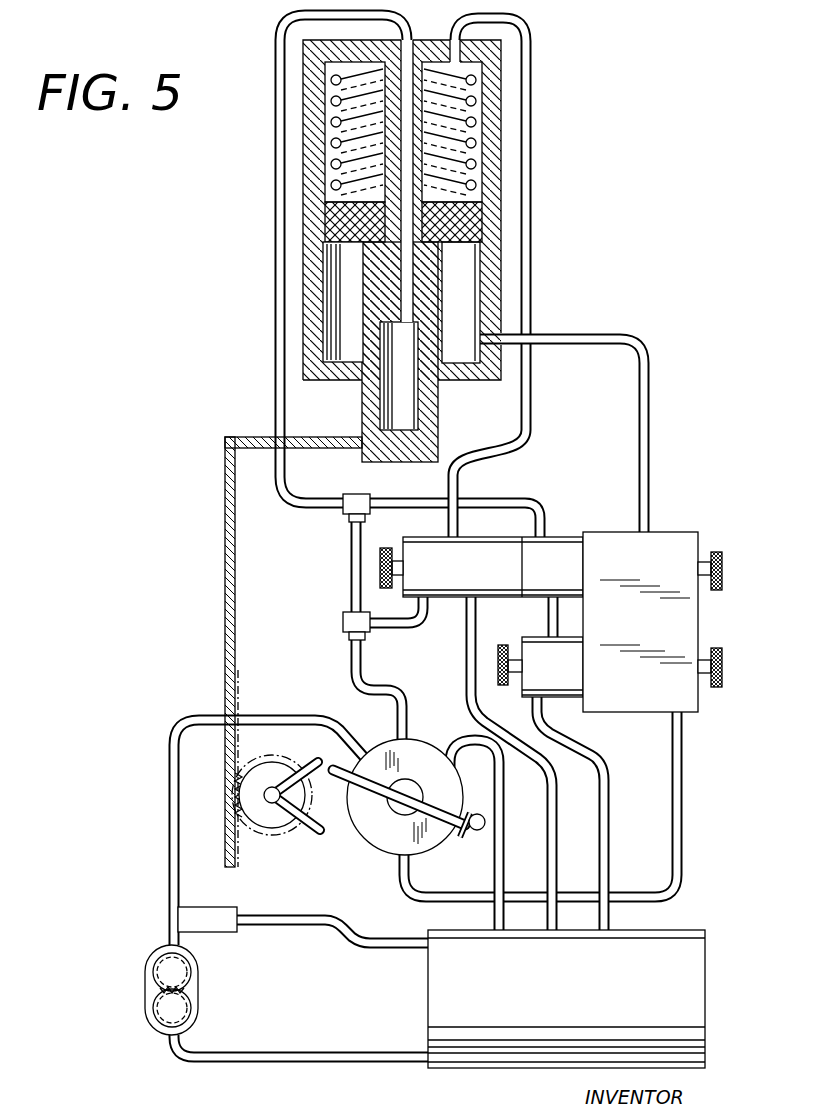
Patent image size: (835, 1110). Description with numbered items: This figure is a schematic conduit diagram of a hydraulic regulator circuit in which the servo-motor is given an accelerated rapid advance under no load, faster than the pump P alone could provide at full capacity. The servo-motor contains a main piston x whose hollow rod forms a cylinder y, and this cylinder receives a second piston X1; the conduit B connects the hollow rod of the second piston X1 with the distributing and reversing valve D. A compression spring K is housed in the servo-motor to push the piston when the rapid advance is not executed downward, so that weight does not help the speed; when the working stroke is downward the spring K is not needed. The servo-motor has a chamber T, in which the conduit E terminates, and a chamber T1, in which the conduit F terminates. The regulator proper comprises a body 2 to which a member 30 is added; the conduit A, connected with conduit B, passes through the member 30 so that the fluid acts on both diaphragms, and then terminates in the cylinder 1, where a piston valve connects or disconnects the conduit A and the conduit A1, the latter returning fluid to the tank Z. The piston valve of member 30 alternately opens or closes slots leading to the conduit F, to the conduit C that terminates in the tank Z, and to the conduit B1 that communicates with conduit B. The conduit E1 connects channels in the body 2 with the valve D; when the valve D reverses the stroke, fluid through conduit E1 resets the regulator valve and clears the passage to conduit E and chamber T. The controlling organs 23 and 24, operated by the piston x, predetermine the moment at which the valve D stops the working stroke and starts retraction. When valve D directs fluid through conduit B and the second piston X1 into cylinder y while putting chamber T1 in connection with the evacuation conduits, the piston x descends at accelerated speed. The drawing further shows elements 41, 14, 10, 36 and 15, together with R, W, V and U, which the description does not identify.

The second piston X1 is at (420, 38).
The compression spring K is at (477, 88).
The chamber of the servo-motor T1 is at (477, 112).
The piston x is at (478, 217).
The conduit F is at (533, 252).
The chamber of the servo-motor T is at (330, 285).
The conduit B is at (273, 347).
The cylinder y is at (370, 405).
The conduit E is at (651, 378).
The conduit A is at (534, 506).
The member 30 is at (565, 537).
The adjusting knob 41 is at (380, 566).
The conduit B1 is at (418, 630).
The adjusting knob 14 is at (503, 645).
The cylinder 1 is at (543, 658).
The body 2 is at (684, 636).
The adjusting knob 10 is at (722, 553).
The adjusting knob 36 is at (722, 680).
The controlling organ 23 is at (312, 762).
The controlling organ 24 is at (318, 830).
The return conduit R is at (168, 812).
The distributing and reversing valve D is at (388, 840).
The pin 15 is at (474, 830).
The conduit W is at (505, 850).
The conduit C is at (558, 845).
The conduit A1 is at (609, 850).
The conduit E1 is at (684, 836).
The valve V is at (237, 918).
The conduit U is at (375, 940).
The pump P is at (199, 986).
The fluid tank Z is at (706, 960).